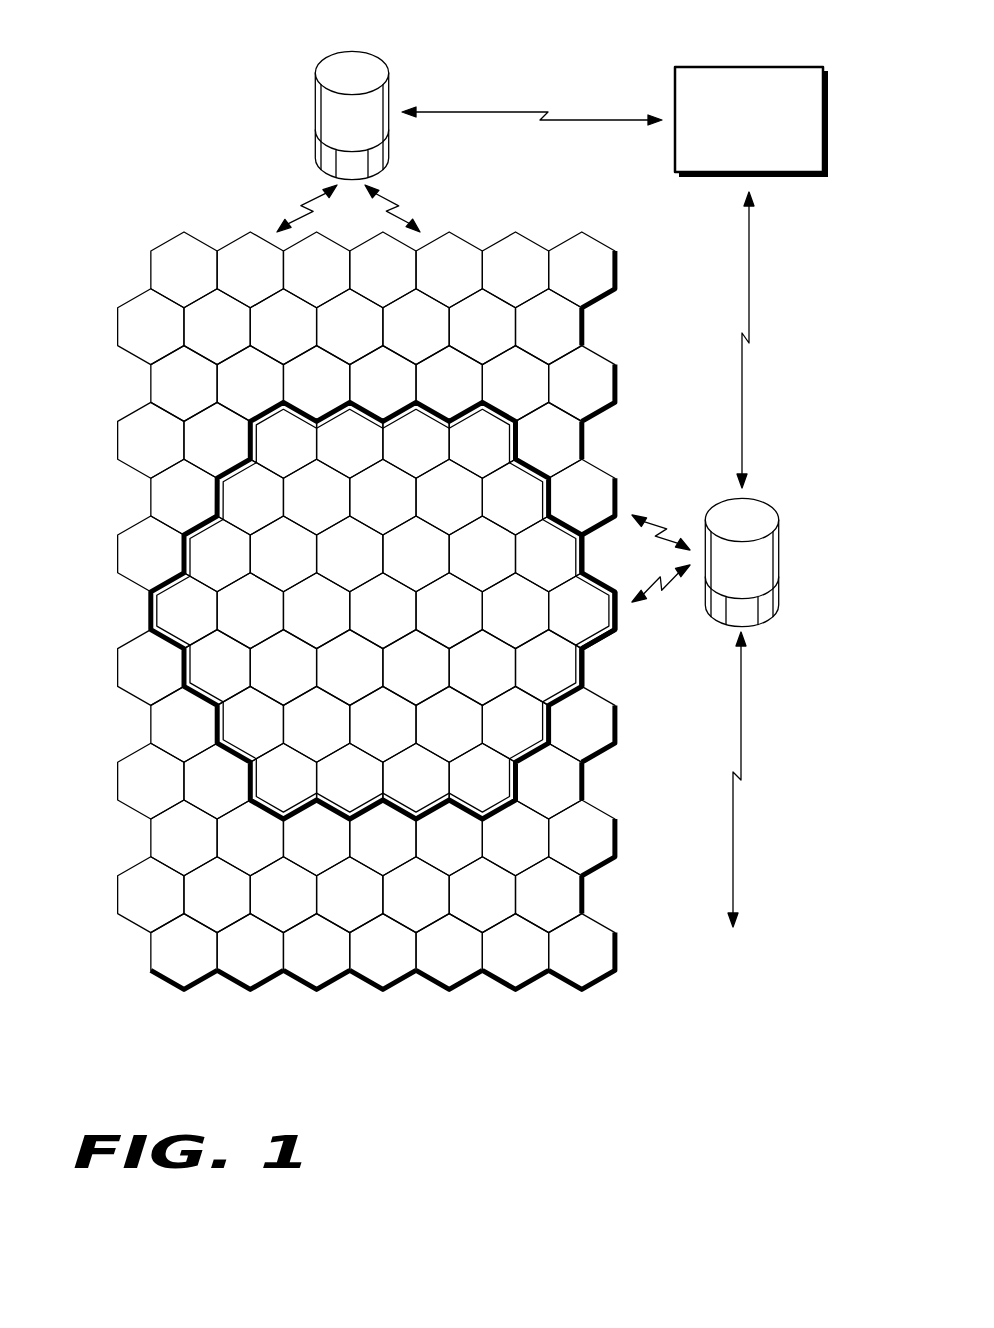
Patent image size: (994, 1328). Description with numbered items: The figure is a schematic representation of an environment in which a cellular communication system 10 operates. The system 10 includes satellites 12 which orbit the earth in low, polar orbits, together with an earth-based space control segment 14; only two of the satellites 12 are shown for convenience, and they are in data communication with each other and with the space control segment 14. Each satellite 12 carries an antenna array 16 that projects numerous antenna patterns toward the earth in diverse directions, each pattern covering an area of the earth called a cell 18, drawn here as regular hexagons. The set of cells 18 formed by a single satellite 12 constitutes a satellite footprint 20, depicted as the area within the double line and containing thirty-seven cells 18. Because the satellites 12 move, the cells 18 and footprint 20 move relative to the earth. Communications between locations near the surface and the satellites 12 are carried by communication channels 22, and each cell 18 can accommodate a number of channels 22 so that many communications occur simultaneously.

The cellular communication system 10 is at (448, 571).
The satellite 12 is at (333, 67).
The space control segment 14 is at (776, 66).
The antenna array 16 is at (320, 145).
The cell 18 is at (125, 438).
The satellite footprint 20 is at (150, 610).
The communication channel 22 is at (304, 214).